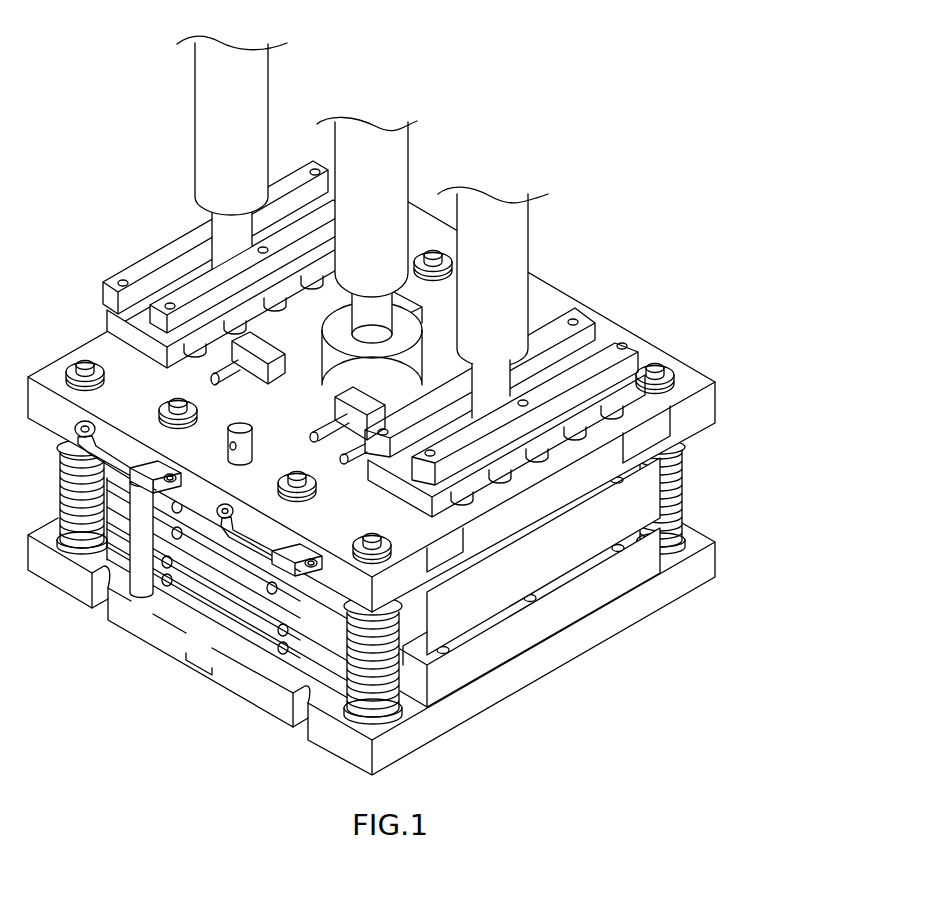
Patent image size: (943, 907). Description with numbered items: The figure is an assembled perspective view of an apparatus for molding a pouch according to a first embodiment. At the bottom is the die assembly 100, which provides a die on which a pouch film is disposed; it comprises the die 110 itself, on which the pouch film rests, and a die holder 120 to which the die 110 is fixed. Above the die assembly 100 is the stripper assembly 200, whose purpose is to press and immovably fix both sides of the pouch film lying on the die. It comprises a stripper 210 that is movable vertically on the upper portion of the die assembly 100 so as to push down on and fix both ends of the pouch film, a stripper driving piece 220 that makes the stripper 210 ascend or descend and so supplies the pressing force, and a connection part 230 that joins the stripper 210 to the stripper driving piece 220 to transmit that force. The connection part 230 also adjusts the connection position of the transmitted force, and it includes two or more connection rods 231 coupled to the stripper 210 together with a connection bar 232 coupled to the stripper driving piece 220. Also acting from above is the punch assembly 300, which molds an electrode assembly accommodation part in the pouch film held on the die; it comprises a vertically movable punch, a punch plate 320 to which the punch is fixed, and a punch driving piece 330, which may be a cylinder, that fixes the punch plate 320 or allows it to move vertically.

The die assembly 100 is at (371, 607).
The die 110 is at (627, 582).
The die holder 120 is at (588, 638).
The stripper assembly 200 is at (436, 413).
The stripper 210 is at (623, 505).
The stripper driving piece 220 is at (565, 277).
The connection part 230 is at (565, 396).
The connection rod 231 is at (674, 376).
The connection bar 232 is at (628, 415).
The punch assembly 300 is at (345, 250).
The punch plate 320 is at (425, 230).
The punch driving piece 330 is at (387, 145).